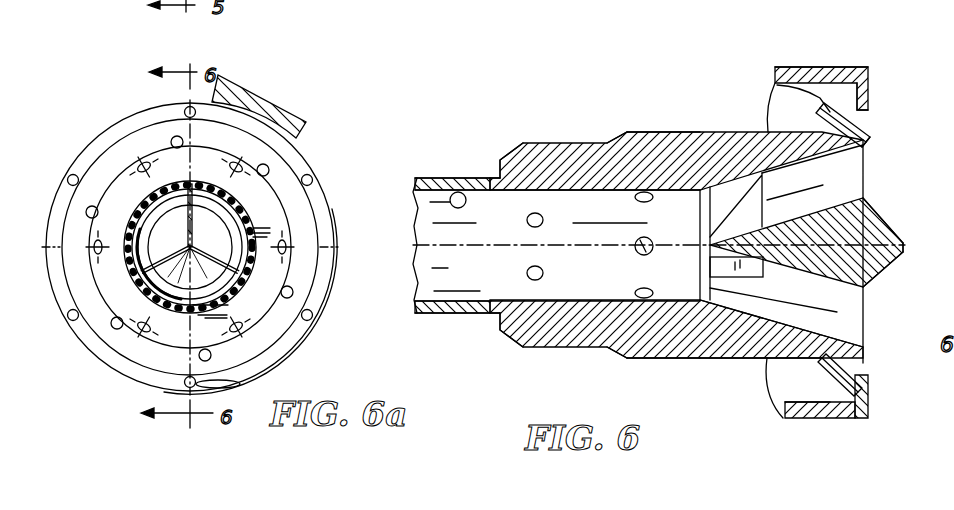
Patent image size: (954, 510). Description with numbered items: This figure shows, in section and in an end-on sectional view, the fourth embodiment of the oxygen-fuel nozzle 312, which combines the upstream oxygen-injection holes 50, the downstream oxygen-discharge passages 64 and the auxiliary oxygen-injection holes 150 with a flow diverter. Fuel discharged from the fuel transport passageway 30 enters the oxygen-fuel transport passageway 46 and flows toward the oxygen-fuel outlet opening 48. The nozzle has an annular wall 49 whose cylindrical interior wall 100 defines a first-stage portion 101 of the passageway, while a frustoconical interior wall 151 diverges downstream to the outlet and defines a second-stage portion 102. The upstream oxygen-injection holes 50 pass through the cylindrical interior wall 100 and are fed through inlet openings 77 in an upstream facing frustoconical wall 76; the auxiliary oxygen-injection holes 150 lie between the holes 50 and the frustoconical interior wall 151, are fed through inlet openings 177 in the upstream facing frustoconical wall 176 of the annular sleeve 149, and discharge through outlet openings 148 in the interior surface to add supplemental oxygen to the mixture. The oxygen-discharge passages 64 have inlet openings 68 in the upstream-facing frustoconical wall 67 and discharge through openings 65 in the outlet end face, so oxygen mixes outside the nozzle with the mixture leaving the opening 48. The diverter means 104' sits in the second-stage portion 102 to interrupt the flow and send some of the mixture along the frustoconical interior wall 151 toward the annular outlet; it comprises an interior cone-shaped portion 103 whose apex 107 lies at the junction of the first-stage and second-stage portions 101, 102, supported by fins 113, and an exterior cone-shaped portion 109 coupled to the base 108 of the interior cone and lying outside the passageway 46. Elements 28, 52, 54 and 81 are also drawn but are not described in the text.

In FIG. 6, the shaft 28 is at (431, 170).
In FIG. 6, the fuel transport passageway 30 is at (463, 192).
In FIG. 6, the oxygen-fuel transport passageway 46 is at (652, 235).
In FIG. 6, the oxygen-fuel outlet opening 48 is at (867, 150).
In FIG. 6, the annular wall 49 is at (568, 160).
In FIG. 6, the upstream oxygen-injection holes 50 is at (530, 224).
In FIG. 6A, the flange 52 is at (296, 106).
In FIG. 6, the flange 52 is at (797, 66).
In FIG. 6, the flange plate 54 is at (843, 66).
In FIG. 6, the oxygen-discharge passages 64 is at (877, 121).
In FIG. 6, the openings 65 is at (867, 137).
In FIG. 6A, the upstream-facing frustoconical wall 67 is at (128, 127).
In FIG. 6, the upstream-facing frustoconical wall 67 is at (827, 404).
In FIG. 6A, the inlet opening 68 is at (82, 170).
In FIG. 6, the inlet opening 68 is at (773, 90).
In FIG. 6A, the upstream facing frustoconical wall 76 is at (260, 192).
In FIG. 6, the upstream facing frustoconical wall 76 is at (533, 327).
In FIG. 6A, the inlet opening 77 is at (290, 247).
In FIG. 6, the inlet opening 77 is at (520, 318).
In FIG. 6, the leg 81 is at (873, 93).
In FIG. 6, the cylindrical interior wall 100 is at (520, 200).
In FIG. 6, the first-stage portion 101 is at (627, 359).
In FIG. 6, the second-stage portion 102 is at (747, 359).
In FIG. 6, the interior cone-shaped portion 103 is at (800, 260).
In FIG. 6, the diverter means 104' is at (897, 203).
In FIG. 6, the apex 107 is at (666, 278).
In FIG. 6, the base 108 is at (880, 270).
In FIG. 6, the exterior cone-shaped portion 109 is at (900, 246).
In FIG. 6, the fins 113 is at (735, 190).
In FIG. 6, the outlet openings 148 is at (634, 241).
In FIG. 6, the annular sleeve 149 is at (657, 142).
In FIG. 6, the auxiliary oxygen-injection holes 150 is at (653, 239).
In FIG. 6, the frustoconical interior wall 151 is at (795, 175).
In FIG. 6A, the upstream facing frustoconical wall 176 is at (263, 340).
In FIG. 6, the upstream facing frustoconical wall 176 is at (626, 353).
In FIG. 6A, the inlet opening 177 is at (294, 291).
In FIG. 6, the oxygen-fuel nozzle 312 is at (619, 122).